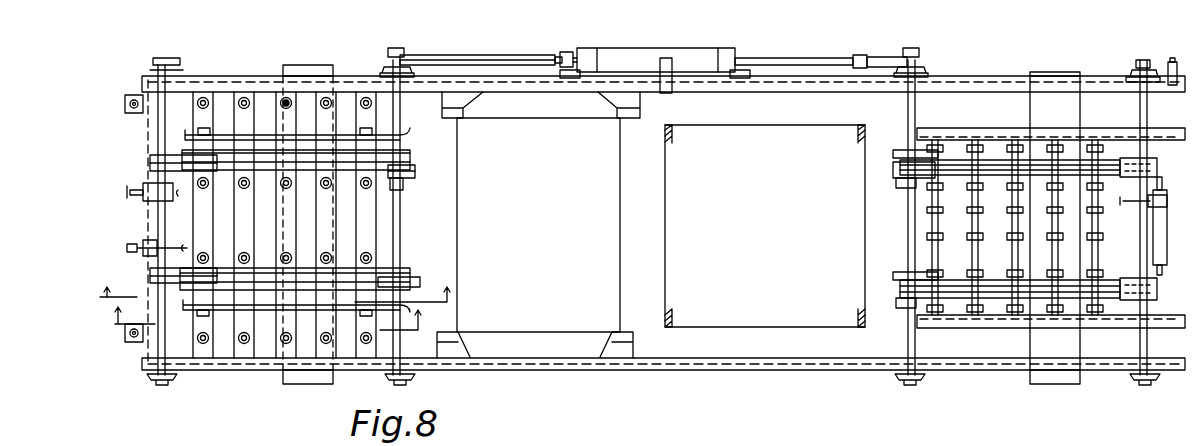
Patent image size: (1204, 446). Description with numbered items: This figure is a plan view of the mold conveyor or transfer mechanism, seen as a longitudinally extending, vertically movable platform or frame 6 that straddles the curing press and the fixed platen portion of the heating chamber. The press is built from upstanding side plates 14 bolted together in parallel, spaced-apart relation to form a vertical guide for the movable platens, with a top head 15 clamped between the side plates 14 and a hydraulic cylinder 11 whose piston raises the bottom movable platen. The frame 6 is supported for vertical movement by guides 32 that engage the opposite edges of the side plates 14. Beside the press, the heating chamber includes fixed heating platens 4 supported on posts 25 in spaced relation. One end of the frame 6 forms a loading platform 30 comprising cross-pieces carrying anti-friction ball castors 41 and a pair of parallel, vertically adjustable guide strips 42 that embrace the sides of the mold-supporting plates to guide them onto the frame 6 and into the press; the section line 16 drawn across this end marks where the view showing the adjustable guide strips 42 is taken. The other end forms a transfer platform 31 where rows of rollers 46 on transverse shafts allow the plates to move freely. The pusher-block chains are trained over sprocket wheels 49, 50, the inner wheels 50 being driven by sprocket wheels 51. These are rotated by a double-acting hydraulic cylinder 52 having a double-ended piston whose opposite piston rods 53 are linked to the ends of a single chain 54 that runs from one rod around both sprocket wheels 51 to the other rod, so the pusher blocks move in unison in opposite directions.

The fixed heating platen 4 is at (765, 226).
The platform frame 6 is at (985, 372).
The hydraulic cylinder 11 is at (274, 290).
The side plate 14 is at (560, 118).
The top head 15 is at (538, 225).
The section line 16- 16 is at (261, 328).
The post 25 is at (686, 126).
The loading platform 30 is at (268, 196).
The transfer platform 31 is at (1051, 184).
The guide 32 is at (445, 105).
The ball castor 41 is at (208, 187).
The guide strip 42 is at (342, 138).
The roller 46 is at (965, 270).
The sprocket wheel 49 is at (150, 161).
The inner sprocket wheel 50 is at (416, 168).
The sprocket wheel 51 is at (403, 56).
The double-acting hydraulic cylinder 52 is at (700, 48).
The piston rod 53 is at (572, 52).
The chain 54 is at (478, 55).